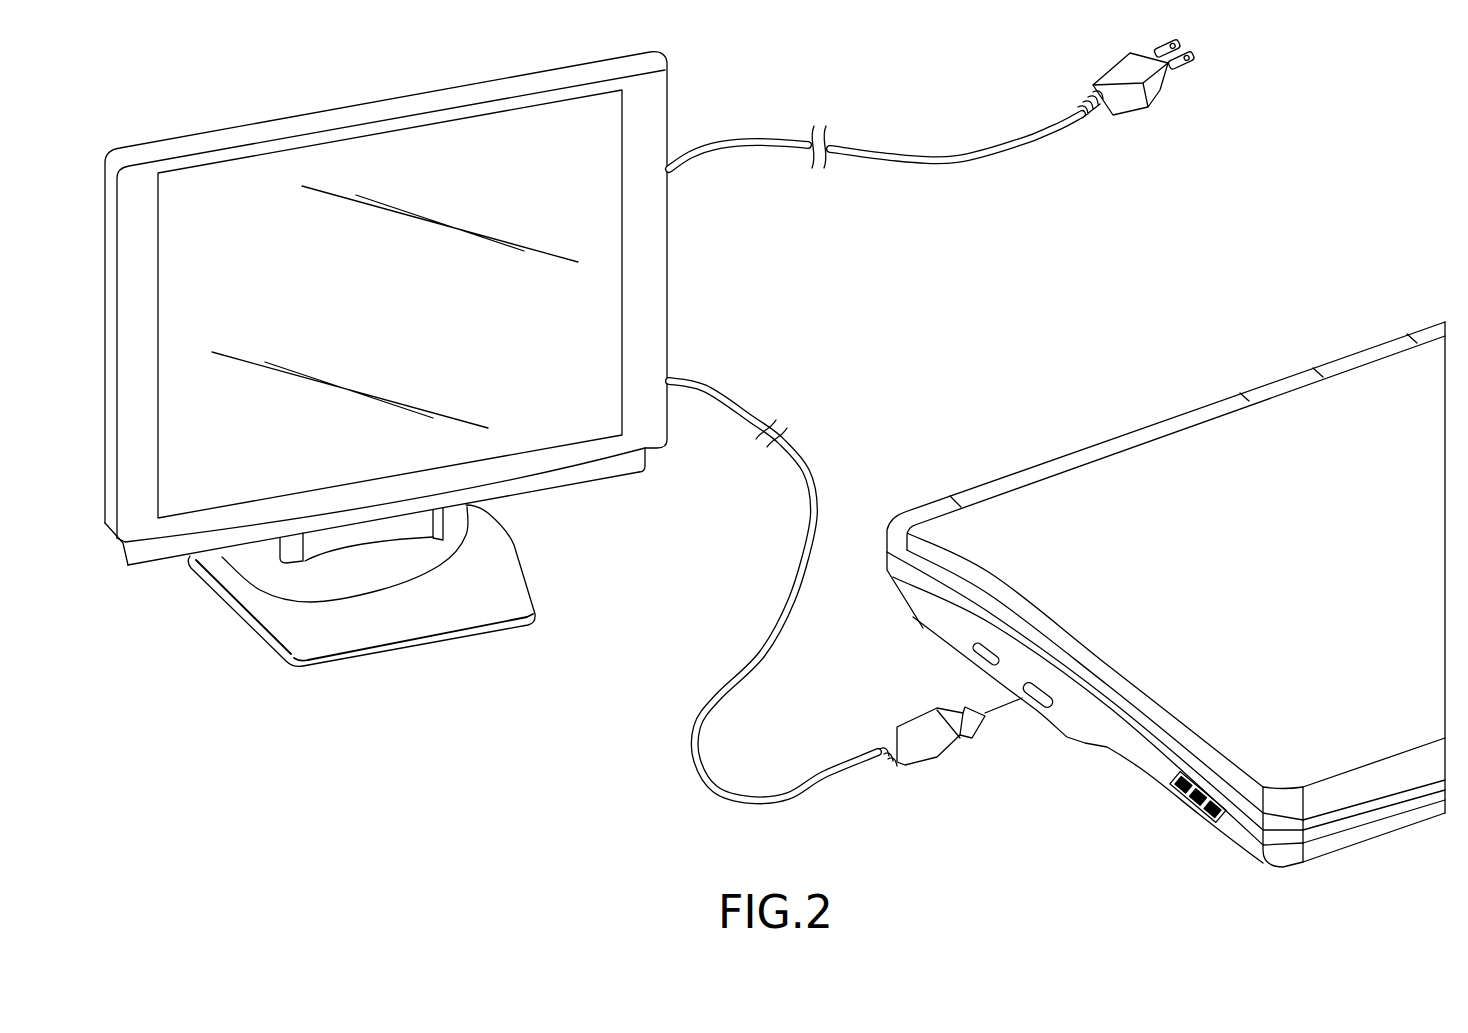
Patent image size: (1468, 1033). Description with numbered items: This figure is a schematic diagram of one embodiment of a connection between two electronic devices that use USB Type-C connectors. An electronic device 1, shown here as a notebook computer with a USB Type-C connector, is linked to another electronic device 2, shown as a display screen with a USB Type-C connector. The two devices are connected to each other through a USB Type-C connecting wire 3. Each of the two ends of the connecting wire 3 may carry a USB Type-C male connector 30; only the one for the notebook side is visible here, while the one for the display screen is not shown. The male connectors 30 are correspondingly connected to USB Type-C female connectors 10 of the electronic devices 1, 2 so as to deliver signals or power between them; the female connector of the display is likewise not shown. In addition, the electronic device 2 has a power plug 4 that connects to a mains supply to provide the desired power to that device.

The electronic device 1 is at (976, 474).
The electronic device 2 is at (648, 263).
The connecting wire 3 is at (748, 668).
The power plug 4 is at (1130, 100).
The USB Type-C female connector 10 is at (1043, 697).
The USB Type-C male connector 30 is at (927, 738).